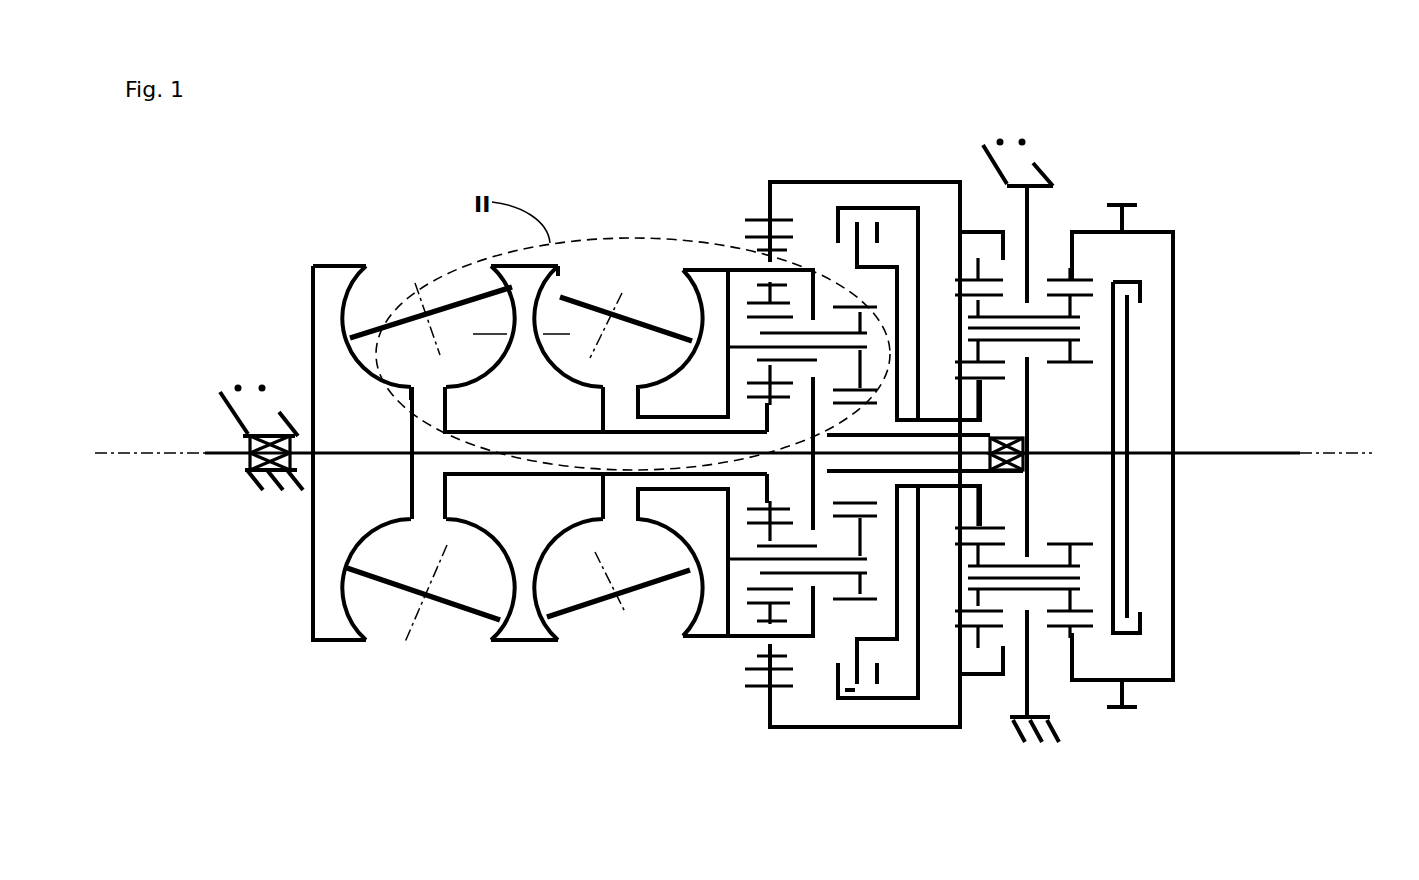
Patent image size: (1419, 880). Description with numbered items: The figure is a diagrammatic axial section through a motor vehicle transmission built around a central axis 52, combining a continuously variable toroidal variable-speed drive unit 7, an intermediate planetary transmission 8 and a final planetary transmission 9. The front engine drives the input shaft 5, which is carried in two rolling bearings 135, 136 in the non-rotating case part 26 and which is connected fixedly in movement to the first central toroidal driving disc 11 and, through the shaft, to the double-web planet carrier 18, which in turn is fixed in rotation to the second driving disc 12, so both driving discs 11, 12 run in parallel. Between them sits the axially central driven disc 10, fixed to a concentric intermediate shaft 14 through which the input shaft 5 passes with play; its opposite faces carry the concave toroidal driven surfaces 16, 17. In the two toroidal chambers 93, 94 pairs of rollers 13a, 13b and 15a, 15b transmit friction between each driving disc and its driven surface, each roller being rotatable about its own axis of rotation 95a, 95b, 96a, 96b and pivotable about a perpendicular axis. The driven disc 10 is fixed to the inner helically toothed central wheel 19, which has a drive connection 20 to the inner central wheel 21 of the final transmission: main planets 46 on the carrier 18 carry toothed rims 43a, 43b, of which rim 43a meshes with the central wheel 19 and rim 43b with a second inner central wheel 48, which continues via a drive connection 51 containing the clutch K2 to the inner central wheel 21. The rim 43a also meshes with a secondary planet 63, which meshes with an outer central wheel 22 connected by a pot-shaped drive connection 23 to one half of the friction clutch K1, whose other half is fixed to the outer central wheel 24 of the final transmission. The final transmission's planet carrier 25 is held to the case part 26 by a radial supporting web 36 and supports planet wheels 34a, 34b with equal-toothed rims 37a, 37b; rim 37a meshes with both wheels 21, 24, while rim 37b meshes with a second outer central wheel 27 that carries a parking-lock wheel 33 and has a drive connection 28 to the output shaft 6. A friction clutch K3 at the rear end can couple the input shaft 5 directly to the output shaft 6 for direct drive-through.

The input shaft 5 is at (208, 450).
The output shaft 6 is at (1212, 453).
The toroidal variable-speed drive unit 7 is at (556, 198).
The intermediate planetary transmission 8 is at (800, 170).
The final planetary transmission 9 is at (997, 207).
The driven disc 10 is at (538, 419).
The first central toroidal driving disc 11 is at (368, 412).
The second central toroidal driving disc 12 is at (700, 406).
The roller 13a is at (388, 585).
The roller 13b is at (460, 290).
The concentric intermediate shaft 14 is at (620, 520).
The roller 15a is at (600, 598).
The roller 15b is at (580, 290).
The concave toroidal driven surface 16 is at (477, 342).
The concave toroidal driven surface 17 is at (565, 342).
The double-web planet carrier 18 is at (790, 270).
The inner helically toothed central wheel 19 is at (742, 625).
The drive connection 20 is at (801, 395).
The inner central wheel 21 is at (1010, 630).
The outer central wheel 22 is at (753, 693).
The pot-shaped drive connection 23 is at (870, 690).
The outer central wheel 24 is at (962, 278).
The planet carrier 25 is at (1027, 557).
The non-rotating case part 26 is at (271, 419).
The second outer central wheel 27 is at (1047, 640).
The drive connection 28 is at (1172, 657).
The parking-lock wheel 33 is at (1113, 710).
The planet wheel 34a is at (1118, 371).
The toothed rim 37a is at (1000, 307).
The planet wheel 34b is at (1177, 430).
The toothed rim 37b is at (1073, 302).
The radial supporting web 36 is at (1032, 225).
The toothed rim 43a is at (755, 485).
The toothed rim 43b is at (862, 585).
The main planet 46 is at (612, 313).
The second inner central wheel 48 is at (920, 490).
The drive connection 51 is at (842, 712).
The central axis 52 is at (152, 453).
The secondary planet 63 is at (758, 252).
The toroidal chamber 93 is at (390, 278).
The toroidal chamber 94 is at (567, 650).
The axis of rotation 95a is at (413, 627).
The axis of rotation 95b is at (430, 290).
The axis of rotation 96a is at (610, 600).
The axis of rotation 96b is at (593, 290).
The rolling bearing 135 is at (247, 468).
The rolling bearing 136 is at (1027, 473).
The friction clutch K1 is at (981, 705).
The clutch K2 is at (875, 188).
The friction clutch K3 is at (1177, 392).